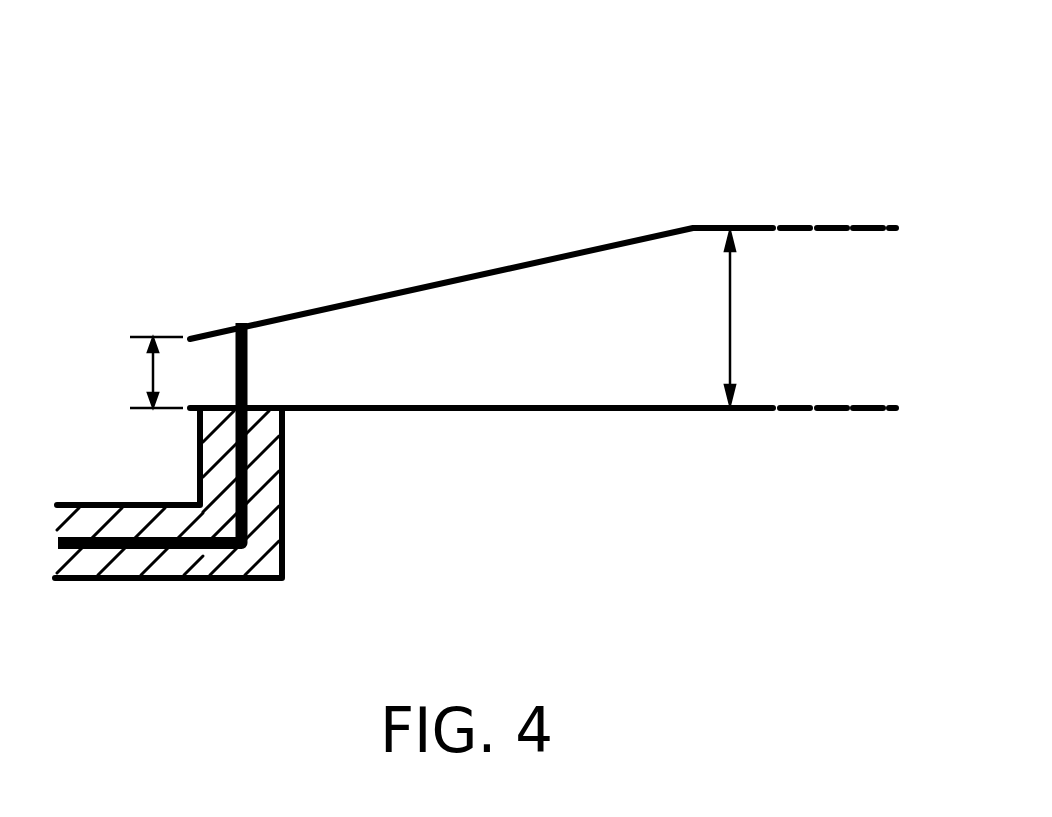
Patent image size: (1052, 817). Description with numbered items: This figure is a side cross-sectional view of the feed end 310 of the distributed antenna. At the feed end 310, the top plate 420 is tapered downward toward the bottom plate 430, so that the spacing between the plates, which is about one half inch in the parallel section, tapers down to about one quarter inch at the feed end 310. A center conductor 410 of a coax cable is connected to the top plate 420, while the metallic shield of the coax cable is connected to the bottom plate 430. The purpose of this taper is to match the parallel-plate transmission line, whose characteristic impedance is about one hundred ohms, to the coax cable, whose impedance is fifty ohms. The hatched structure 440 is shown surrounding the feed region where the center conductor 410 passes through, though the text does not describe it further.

The feed end 310 is at (277, 138).
The center conductor 410 is at (248, 367).
The top plate 420 is at (465, 273).
The bottom plate 430 is at (687, 411).
The support structure 440 is at (202, 480).